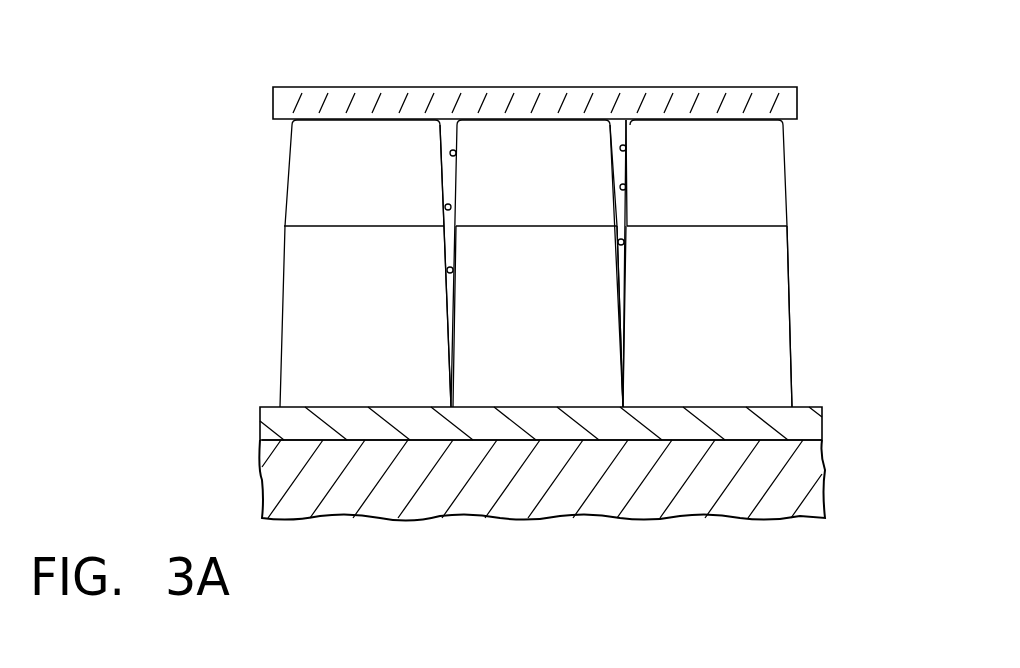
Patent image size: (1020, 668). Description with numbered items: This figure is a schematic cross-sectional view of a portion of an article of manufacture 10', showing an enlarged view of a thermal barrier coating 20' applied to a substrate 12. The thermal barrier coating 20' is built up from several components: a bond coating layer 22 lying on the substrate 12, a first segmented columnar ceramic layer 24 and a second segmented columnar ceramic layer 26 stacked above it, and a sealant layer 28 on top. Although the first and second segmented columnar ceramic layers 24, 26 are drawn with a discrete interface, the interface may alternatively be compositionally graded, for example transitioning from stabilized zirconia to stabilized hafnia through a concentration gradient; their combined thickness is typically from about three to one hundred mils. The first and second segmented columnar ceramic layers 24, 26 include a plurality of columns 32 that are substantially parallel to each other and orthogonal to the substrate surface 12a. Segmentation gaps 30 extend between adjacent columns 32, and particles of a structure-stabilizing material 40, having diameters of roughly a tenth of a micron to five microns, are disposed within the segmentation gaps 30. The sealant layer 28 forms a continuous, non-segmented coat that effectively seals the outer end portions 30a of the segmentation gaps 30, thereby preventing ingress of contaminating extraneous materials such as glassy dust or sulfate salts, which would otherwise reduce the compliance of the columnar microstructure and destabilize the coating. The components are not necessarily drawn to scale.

The article of manufacture 10' is at (785, 27).
The substrate 12 is at (337, 518).
The substrate surface 12a is at (782, 438).
The thermal barrier coating 20' is at (469, 267).
The bond coating layer 22 is at (810, 423).
The first segmented columnar ceramic layer 24 is at (240, 228).
The second segmented columnar ceramic layer 26 is at (816, 113).
The sealant layer 28 is at (523, 93).
The segmentation gaps 30 is at (626, 168).
The outer end portions of segmentation gaps 30a is at (457, 137).
The columns 32 is at (622, 310).
The particles of structure-stabilizing material 40 is at (452, 266).